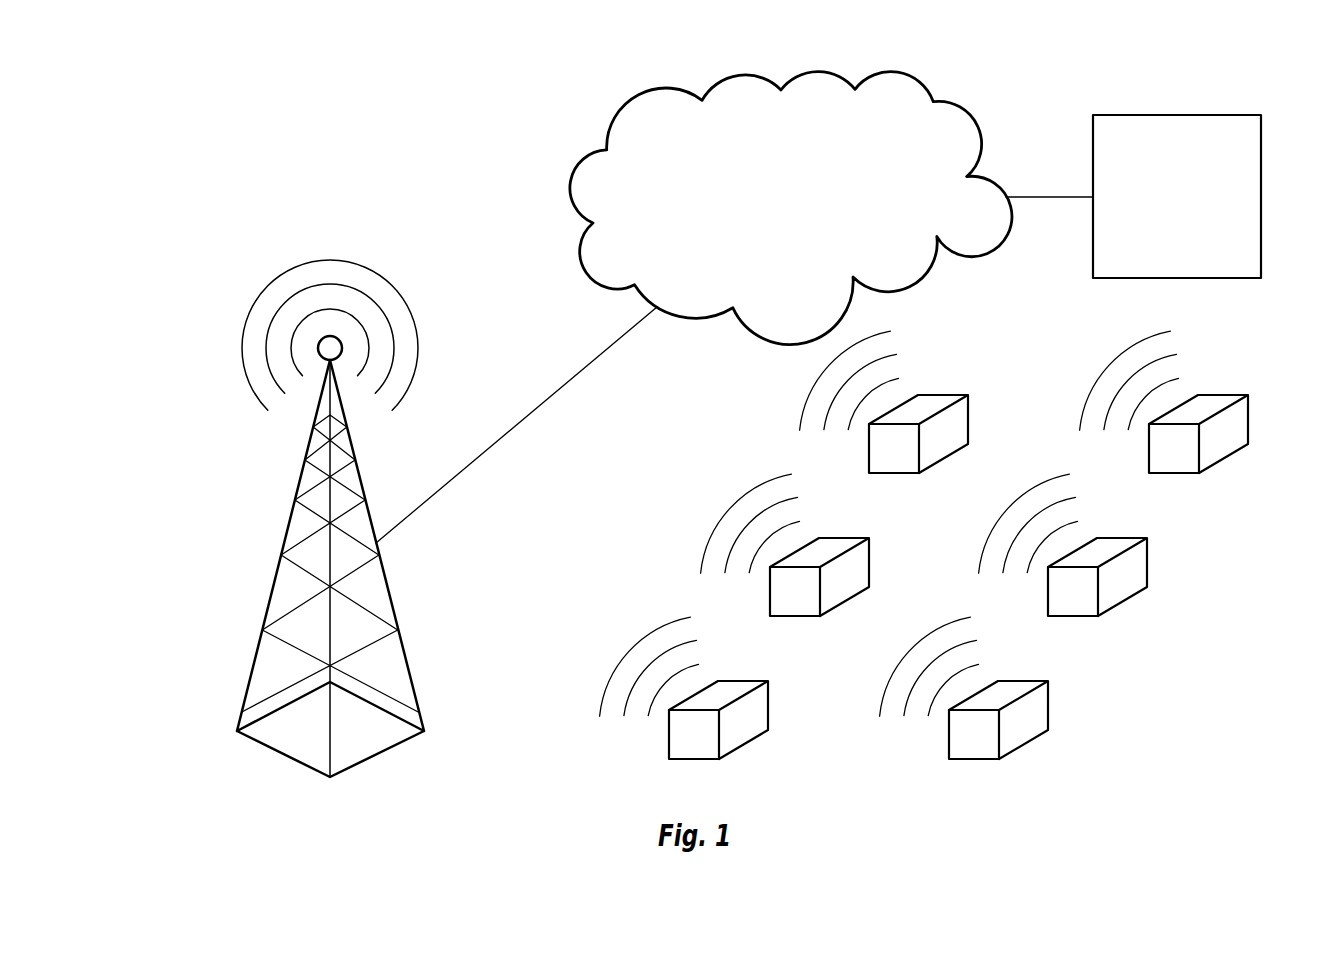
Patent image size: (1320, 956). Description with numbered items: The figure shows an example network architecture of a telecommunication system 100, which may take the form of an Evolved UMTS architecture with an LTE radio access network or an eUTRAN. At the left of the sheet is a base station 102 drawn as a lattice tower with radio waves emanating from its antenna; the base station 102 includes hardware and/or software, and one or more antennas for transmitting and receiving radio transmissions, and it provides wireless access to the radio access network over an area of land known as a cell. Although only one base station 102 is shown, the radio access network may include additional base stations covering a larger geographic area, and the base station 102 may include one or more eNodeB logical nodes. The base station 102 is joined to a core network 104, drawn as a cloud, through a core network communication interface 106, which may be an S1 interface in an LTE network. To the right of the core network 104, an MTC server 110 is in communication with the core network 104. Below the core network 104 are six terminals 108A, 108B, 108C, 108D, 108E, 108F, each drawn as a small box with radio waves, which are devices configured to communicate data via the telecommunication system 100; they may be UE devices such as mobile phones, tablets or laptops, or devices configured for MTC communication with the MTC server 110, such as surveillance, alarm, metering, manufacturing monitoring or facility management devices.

The telecommunication system 100 is at (244, 152).
The base station 102 is at (285, 538).
The core network 104 is at (795, 224).
The core network communication interface 106 is at (545, 402).
The terminal 108A is at (844, 538).
The terminal 108B is at (1122, 538).
The terminal 108C is at (743, 681).
The terminal 108D is at (1023, 681).
The terminal 108E is at (943, 395).
The terminal 108F is at (1223, 395).
The MTC server 110 is at (1192, 239).